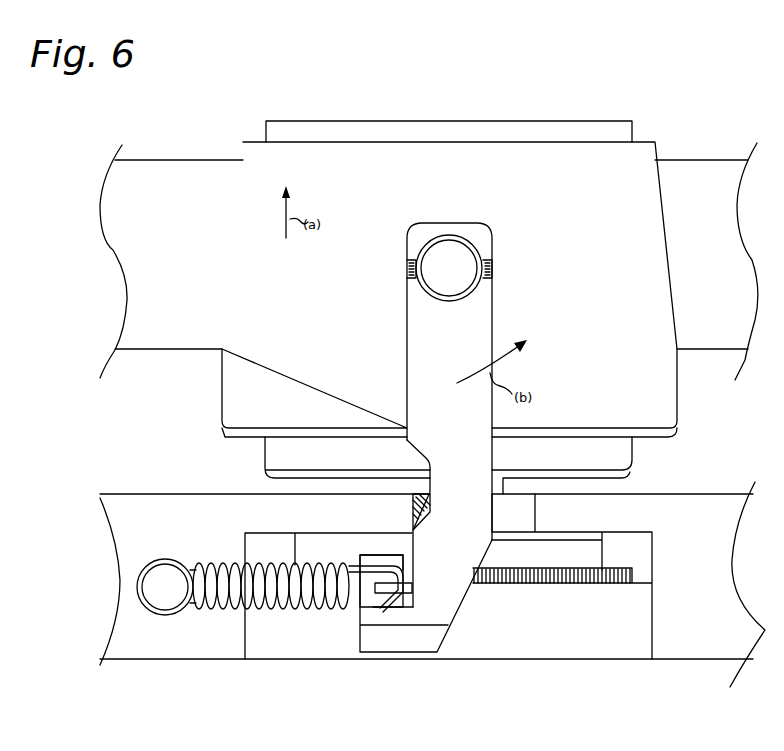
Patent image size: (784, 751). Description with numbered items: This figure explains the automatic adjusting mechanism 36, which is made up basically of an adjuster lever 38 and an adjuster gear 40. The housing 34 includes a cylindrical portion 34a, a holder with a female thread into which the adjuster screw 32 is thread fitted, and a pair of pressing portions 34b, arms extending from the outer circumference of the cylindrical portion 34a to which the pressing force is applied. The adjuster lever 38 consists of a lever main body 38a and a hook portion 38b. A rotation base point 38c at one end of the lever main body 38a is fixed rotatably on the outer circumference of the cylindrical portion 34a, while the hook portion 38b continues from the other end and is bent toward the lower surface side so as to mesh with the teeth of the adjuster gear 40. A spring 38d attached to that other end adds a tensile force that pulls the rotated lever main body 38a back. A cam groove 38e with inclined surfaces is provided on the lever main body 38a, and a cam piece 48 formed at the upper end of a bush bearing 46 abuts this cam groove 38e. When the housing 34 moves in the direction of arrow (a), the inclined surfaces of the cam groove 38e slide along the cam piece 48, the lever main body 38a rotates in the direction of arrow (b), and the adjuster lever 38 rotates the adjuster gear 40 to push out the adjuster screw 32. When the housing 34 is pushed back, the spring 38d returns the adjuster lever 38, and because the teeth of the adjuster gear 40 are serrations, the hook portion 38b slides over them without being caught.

The adjuster screw 32 is at (602, 455).
The housing 34 is at (467, 143).
The cylindrical portion 34a is at (580, 157).
The pressing portions 34b is at (165, 183).
The automatic adjusting mechanism 36 is at (448, 611).
The adjuster lever 38 is at (415, 456).
The lever main body 38a is at (472, 337).
The hook portion 38b is at (370, 552).
The rotation base point 38c is at (462, 242).
The spring 38d is at (272, 611).
The cam groove 38e is at (371, 492).
The adjuster gear 40 is at (551, 583).
The bush bearing 46 is at (188, 660).
The cam piece 48 is at (414, 512).